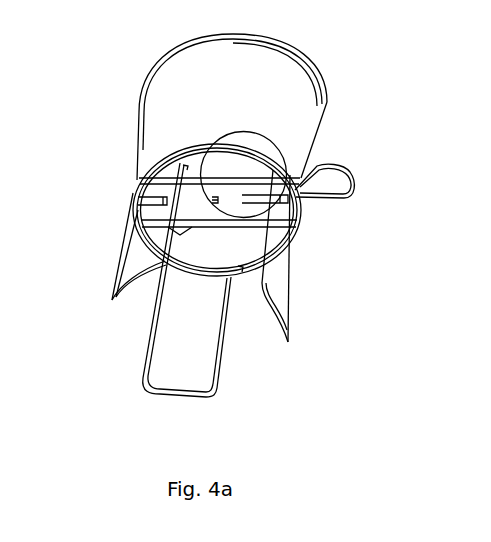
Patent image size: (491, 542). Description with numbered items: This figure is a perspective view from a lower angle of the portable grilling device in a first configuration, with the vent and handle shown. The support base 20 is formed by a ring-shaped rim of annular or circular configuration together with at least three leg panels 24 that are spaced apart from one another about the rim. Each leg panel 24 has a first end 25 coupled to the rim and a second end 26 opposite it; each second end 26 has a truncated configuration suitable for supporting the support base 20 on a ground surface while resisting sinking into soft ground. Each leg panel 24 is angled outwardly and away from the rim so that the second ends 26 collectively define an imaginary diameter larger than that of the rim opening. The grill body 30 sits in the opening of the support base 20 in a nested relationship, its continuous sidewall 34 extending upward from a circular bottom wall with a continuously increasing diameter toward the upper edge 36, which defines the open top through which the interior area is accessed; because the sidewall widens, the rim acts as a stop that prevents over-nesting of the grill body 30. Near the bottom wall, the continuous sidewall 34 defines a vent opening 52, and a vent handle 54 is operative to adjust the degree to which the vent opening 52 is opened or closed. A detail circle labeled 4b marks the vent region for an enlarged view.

The support base 20 is at (228, 268).
The leg panel 24 is at (117, 272).
The first end 25 is at (113, 195).
The second end 26 is at (122, 383).
The grill body 30 is at (175, 91).
The continuous sidewall 34 is at (265, 98).
The upper edge 36 is at (298, 57).
The vent opening 52 is at (292, 196).
The vent handle 54 is at (356, 178).
The detail view circle 4b is at (282, 158).